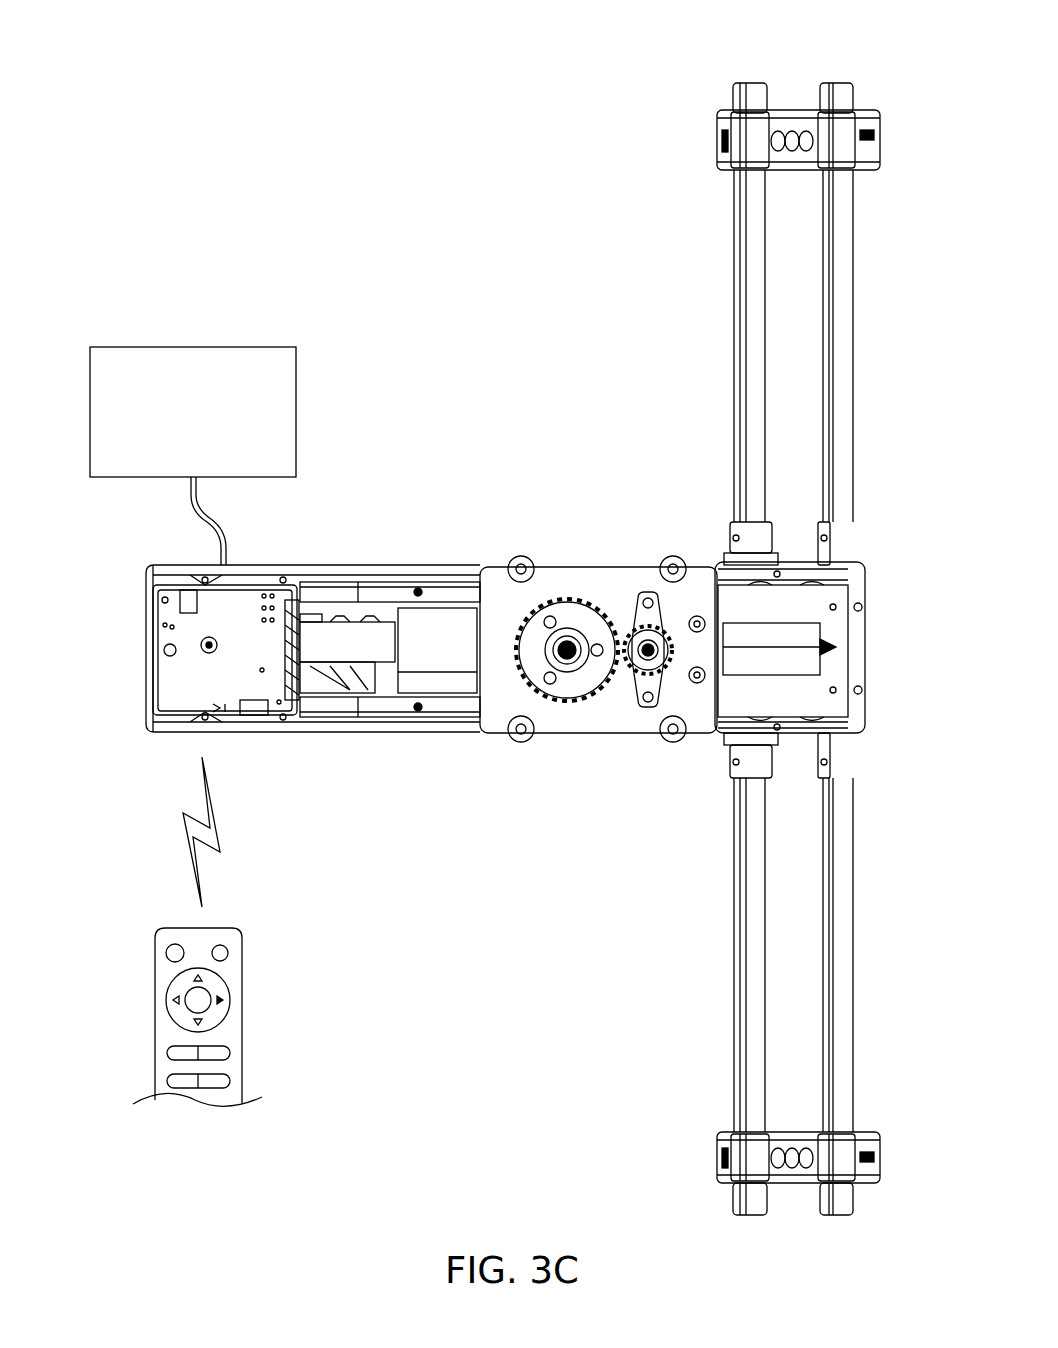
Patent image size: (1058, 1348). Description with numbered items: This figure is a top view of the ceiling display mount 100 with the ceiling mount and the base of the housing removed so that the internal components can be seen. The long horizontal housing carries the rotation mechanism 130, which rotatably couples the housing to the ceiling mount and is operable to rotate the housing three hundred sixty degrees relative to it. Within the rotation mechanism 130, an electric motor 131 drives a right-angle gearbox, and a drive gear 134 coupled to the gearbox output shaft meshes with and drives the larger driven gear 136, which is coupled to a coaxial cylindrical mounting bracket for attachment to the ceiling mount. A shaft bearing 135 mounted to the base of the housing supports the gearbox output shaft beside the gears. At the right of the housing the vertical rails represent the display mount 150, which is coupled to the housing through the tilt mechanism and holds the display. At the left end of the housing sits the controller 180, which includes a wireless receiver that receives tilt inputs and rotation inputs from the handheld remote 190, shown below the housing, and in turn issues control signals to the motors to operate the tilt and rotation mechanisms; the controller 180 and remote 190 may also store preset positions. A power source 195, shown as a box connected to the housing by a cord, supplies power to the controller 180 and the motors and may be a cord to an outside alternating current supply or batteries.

The ceiling display mount 100 is at (108, 93).
The display mount 150 is at (745, 270).
The rotation mechanism 130 is at (472, 552).
The electric motor 131 is at (787, 635).
The driven gear 136 is at (563, 613).
The drive gear 134 is at (620, 636).
The shaft bearing 135 is at (650, 598).
The controller 180 is at (237, 687).
The power source 195 is at (173, 453).
The remote 190 is at (230, 1031).